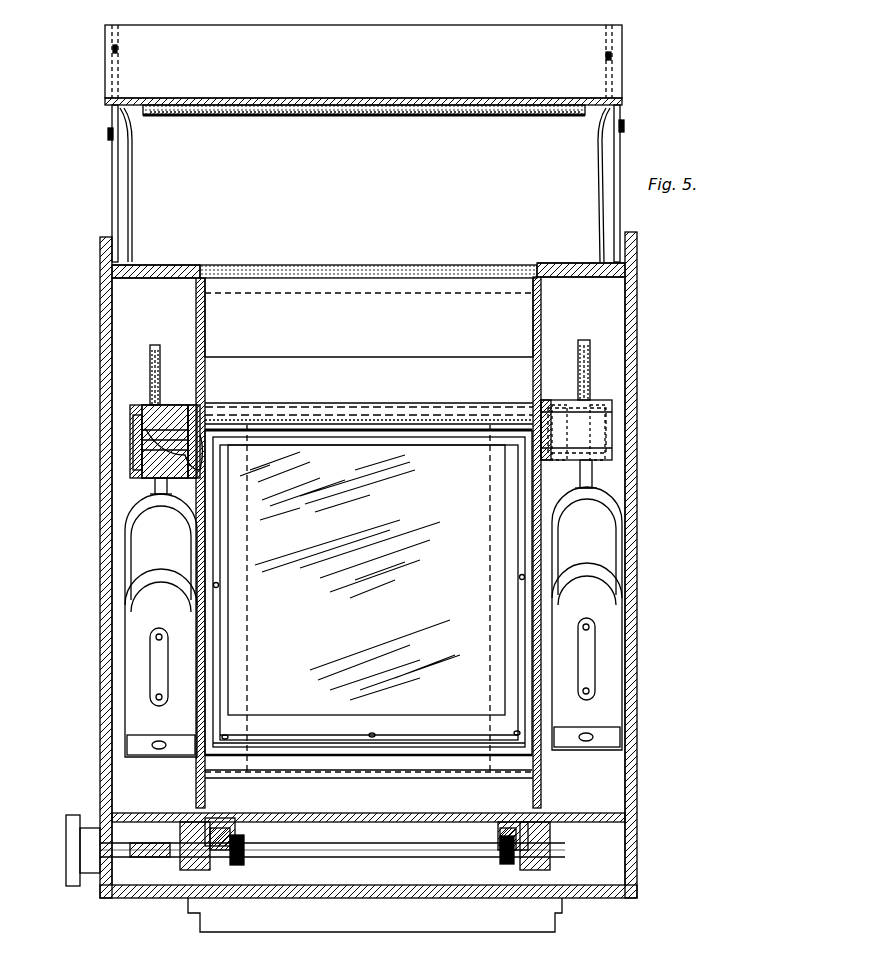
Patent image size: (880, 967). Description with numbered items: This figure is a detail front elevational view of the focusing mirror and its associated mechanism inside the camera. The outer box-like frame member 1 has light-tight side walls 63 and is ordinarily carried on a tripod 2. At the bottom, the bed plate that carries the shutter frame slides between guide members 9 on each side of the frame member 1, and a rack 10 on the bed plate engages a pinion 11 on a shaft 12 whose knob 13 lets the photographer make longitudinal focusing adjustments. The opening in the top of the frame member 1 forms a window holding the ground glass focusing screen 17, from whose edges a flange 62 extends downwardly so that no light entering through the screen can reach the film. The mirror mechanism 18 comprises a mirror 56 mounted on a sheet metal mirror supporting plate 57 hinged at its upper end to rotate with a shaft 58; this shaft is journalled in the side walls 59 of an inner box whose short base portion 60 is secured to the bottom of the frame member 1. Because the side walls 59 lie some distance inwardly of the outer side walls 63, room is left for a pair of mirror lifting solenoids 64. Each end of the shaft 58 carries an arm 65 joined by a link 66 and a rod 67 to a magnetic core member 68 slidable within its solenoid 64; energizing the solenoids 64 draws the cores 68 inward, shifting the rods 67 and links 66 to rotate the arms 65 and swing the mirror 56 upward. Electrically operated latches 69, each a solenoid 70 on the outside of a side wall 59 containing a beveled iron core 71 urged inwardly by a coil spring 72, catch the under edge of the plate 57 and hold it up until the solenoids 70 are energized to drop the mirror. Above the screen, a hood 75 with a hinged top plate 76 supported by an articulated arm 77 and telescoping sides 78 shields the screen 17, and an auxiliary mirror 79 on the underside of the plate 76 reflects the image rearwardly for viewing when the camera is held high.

The box-like frame member 1 is at (640, 275).
The tripod 2 is at (478, 932).
The guide members 9 is at (210, 818).
The rack 10 is at (252, 834).
The pinion 11 is at (244, 862).
The shaft 12 is at (370, 848).
The knob 13 is at (73, 833).
The ground glass focusing screen 17 is at (376, 262).
The mirror mechanism 18 is at (376, 410).
The mirror 56 is at (408, 465).
The mirror supporting plate 57 is at (293, 745).
The shaft 58 is at (297, 412).
The side walls 59 is at (205, 536).
The base portion 60 is at (400, 812).
The flange 62 is at (207, 326).
The side walls 63 is at (112, 486).
The mirror lifting solenoids 64 is at (140, 565).
The arm 65 is at (157, 347).
The link 66 is at (160, 368).
The rod 67 is at (167, 487).
The magnetic core member 68 is at (168, 665).
The electrically operated latches 69 is at (612, 410).
The solenoid 70 is at (148, 408).
The iron core 71 is at (197, 410).
The coil spring 72 is at (145, 440).
The hood 75 is at (247, 98).
The hinged top plate 76 is at (378, 104).
The articulated arm 77 is at (112, 178).
The telescoping sides 78 is at (150, 190).
The auxiliary mirror 79 is at (452, 112).